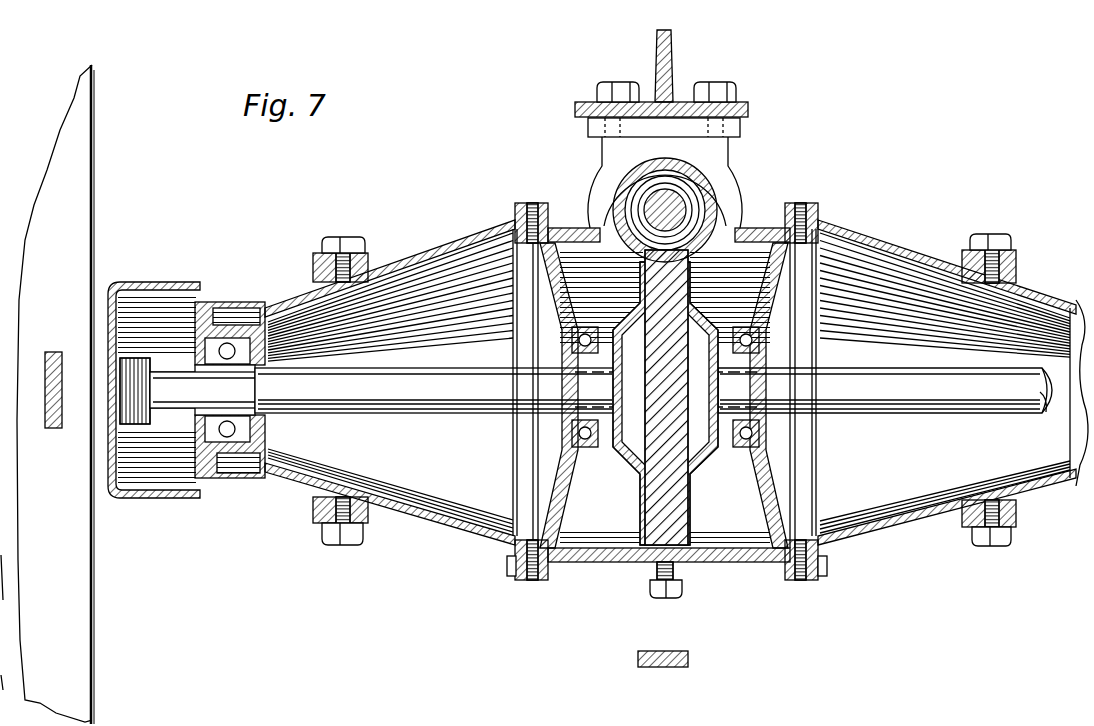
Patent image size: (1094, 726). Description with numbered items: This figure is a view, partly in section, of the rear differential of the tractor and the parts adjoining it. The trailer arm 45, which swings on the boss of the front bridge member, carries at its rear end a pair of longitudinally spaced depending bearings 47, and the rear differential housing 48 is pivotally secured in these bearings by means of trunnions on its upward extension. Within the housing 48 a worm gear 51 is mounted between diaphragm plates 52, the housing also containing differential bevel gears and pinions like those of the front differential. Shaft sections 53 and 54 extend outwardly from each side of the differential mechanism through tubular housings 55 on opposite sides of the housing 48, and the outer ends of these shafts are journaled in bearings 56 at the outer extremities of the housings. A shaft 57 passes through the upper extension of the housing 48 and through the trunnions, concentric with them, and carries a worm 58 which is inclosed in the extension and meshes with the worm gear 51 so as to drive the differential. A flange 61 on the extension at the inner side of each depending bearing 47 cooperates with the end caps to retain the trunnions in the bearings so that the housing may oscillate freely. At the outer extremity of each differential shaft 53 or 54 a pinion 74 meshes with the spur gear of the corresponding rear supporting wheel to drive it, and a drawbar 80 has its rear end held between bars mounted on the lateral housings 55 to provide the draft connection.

The trailer arm 45 is at (674, 47).
The depending bearings 47 is at (712, 150).
The rear differential housing 48 is at (562, 226).
The worm gear 51 is at (646, 487).
The diaphragm plates 52 is at (548, 307).
The shaft section 53 is at (408, 412).
The shaft section 54 is at (898, 415).
The tubular housings 55 is at (424, 253).
The bearings 56 is at (242, 335).
The shaft 57 is at (670, 212).
The worm 58 is at (694, 193).
The flange 61 is at (712, 172).
The pinion 74 is at (143, 470).
The drawbar 80 is at (694, 659).